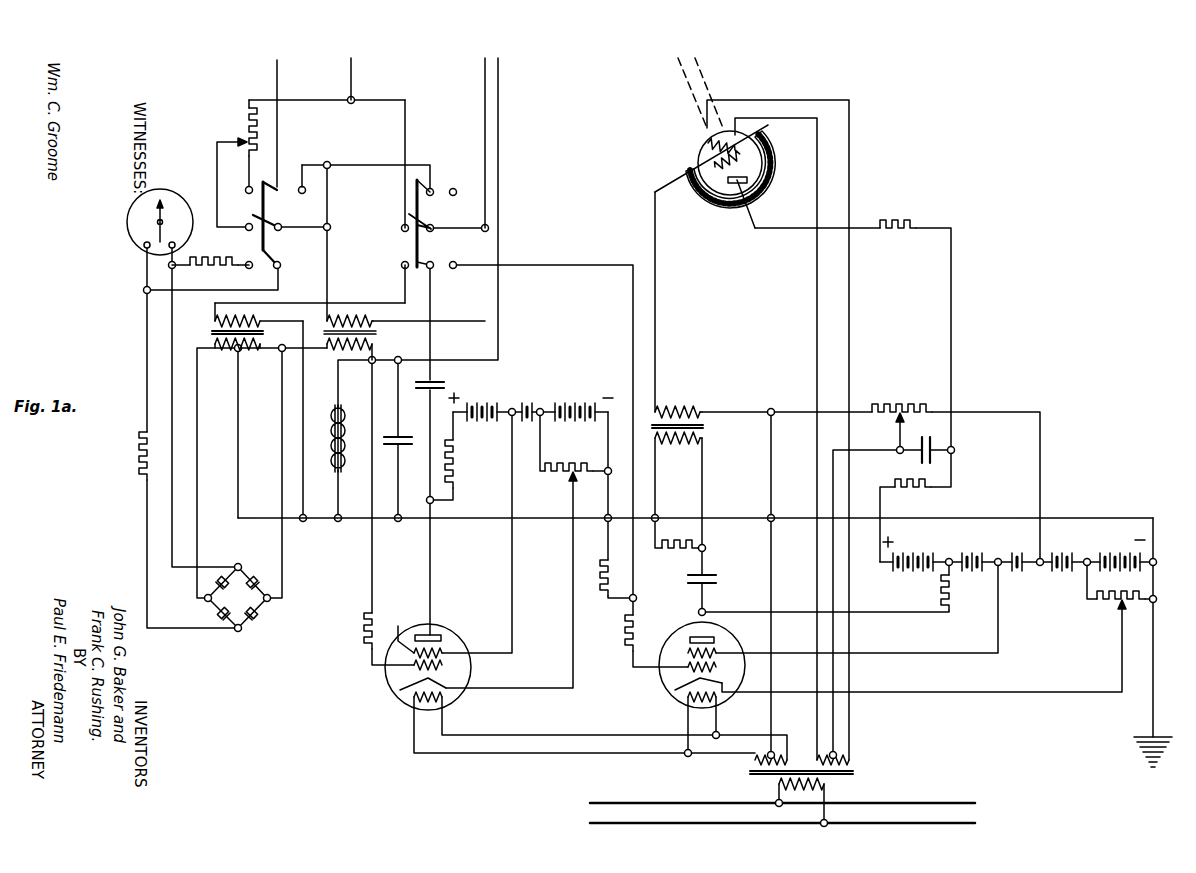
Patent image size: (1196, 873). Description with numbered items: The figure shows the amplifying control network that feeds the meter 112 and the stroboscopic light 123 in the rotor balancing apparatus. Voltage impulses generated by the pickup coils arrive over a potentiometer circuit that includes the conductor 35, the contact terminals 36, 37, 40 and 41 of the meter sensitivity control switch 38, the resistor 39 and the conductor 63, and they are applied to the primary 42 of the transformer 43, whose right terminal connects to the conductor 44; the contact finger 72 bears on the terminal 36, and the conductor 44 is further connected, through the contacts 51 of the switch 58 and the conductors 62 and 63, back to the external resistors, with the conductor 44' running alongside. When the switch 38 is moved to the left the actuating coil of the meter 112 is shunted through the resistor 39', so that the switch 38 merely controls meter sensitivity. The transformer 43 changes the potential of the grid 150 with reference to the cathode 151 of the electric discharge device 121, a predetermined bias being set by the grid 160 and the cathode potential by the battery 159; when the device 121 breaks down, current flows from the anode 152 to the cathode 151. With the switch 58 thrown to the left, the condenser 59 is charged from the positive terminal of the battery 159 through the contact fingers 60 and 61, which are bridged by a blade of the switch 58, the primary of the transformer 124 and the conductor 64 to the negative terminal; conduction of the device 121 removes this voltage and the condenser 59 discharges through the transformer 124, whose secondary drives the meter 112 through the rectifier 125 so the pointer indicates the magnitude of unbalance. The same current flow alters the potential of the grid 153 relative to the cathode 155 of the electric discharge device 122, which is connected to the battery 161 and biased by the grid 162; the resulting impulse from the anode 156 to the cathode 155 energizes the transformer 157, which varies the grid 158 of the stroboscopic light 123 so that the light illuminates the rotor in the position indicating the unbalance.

The conductor 35 is at (278, 70).
The conductor 63 is at (352, 72).
The conductor 62 is at (406, 112).
The conductor 44' is at (470, 143).
The conductor 44 is at (429, 335).
The resistor 39 is at (228, 145).
The contact terminal 37 is at (246, 195).
The contact terminal 36 is at (280, 192).
The contact finger 72 is at (302, 186).
The contact terminal 40 is at (248, 232).
The contact terminal 41 is at (281, 230).
The meter sensitivity control switch 38 is at (314, 273).
The resistor 39' is at (210, 275).
The meter 112 is at (171, 197).
The switch 58 is at (395, 253).
The contacts 51 is at (436, 213).
The contact finger 60 is at (431, 262).
The contact finger 61 is at (406, 269).
The transformer 124 is at (210, 335).
The primary 42 is at (349, 316).
The transformer 43 is at (413, 349).
The condenser 59 is at (436, 380).
The battery 159 is at (547, 403).
The conductor 64 is at (474, 520).
The rectifier 125 is at (311, 624).
The electric discharge device 121 is at (389, 680).
The anode 152 is at (442, 633).
The grid 160 is at (398, 626).
The grid 150 is at (442, 665).
The cathode 151 is at (448, 696).
The electric discharge device 122 is at (665, 684).
The anode 156 is at (716, 634).
The grid 153 is at (720, 650).
The grid 162 is at (686, 660).
The cathode 155 is at (725, 684).
The transformer 157 is at (692, 401).
The stroboscopic light 123 is at (760, 187).
The grid 158 is at (743, 150).
The battery 161 is at (997, 546).